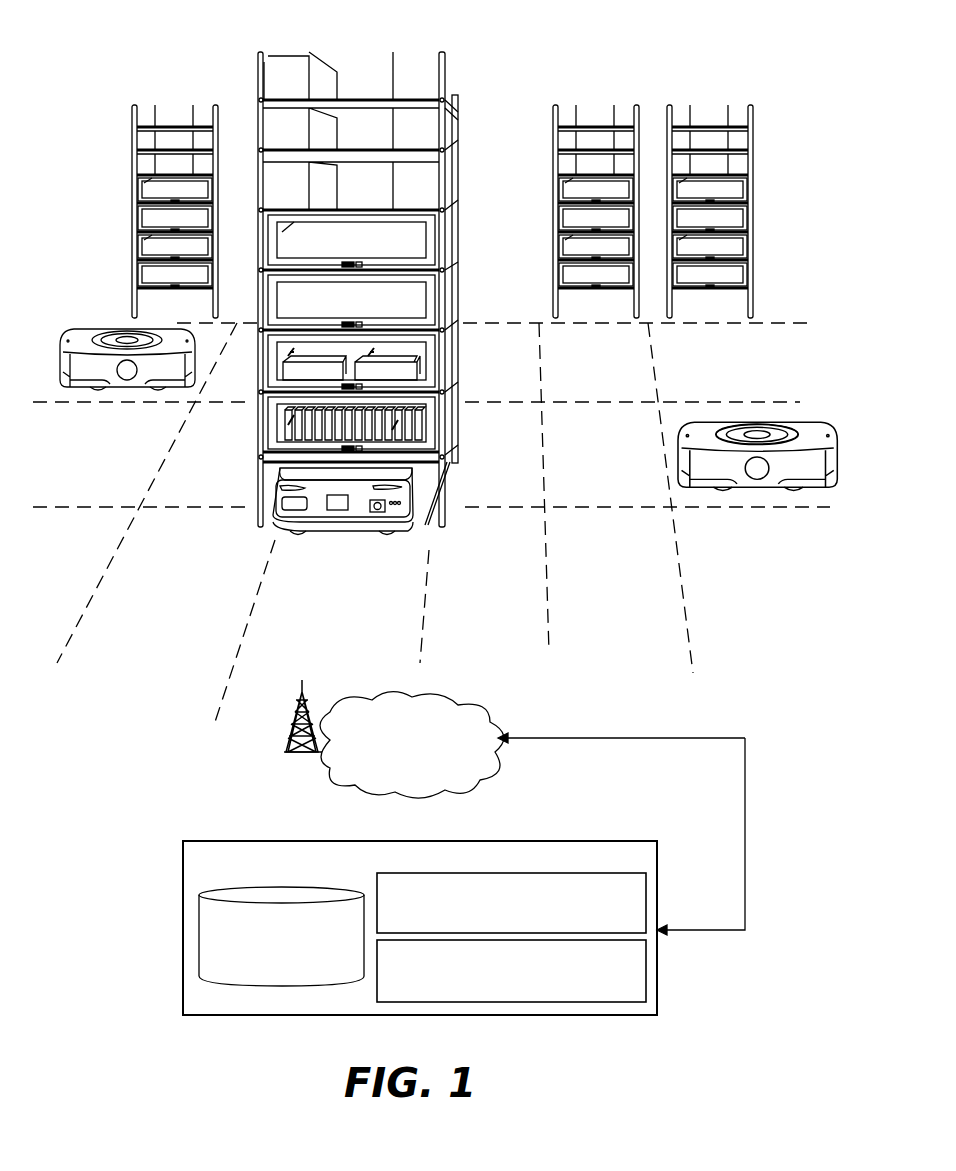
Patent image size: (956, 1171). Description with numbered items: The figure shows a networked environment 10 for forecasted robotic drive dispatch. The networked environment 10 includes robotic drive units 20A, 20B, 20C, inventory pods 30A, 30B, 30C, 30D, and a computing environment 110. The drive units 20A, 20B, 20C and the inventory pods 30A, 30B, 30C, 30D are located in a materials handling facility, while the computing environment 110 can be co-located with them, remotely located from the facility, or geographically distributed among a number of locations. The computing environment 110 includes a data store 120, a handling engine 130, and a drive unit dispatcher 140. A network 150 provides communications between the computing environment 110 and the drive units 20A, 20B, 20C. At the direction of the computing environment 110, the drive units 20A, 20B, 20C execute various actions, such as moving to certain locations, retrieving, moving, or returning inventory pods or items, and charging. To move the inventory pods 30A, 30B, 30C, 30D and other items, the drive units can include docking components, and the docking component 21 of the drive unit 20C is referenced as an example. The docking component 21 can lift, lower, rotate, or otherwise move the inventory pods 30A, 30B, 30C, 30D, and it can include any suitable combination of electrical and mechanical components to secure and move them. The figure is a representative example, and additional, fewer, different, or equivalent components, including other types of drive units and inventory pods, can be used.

The networked environment 10 is at (95, 58).
The robotic drive unit 20A is at (352, 534).
The robotic drive unit 20B is at (90, 333).
The robotic drive unit 20C is at (805, 425).
The docking component 21 is at (735, 422).
The inventory pod 30A is at (466, 66).
The inventory pod 30B is at (174, 102).
The inventory pod 30C is at (589, 102).
The inventory pod 30D is at (713, 102).
The computing environment 110 is at (420, 928).
The data store 120 is at (281, 936).
The handling engine 130 is at (511, 903).
The drive unit dispatcher 140 is at (511, 971).
The network 150 is at (412, 745).